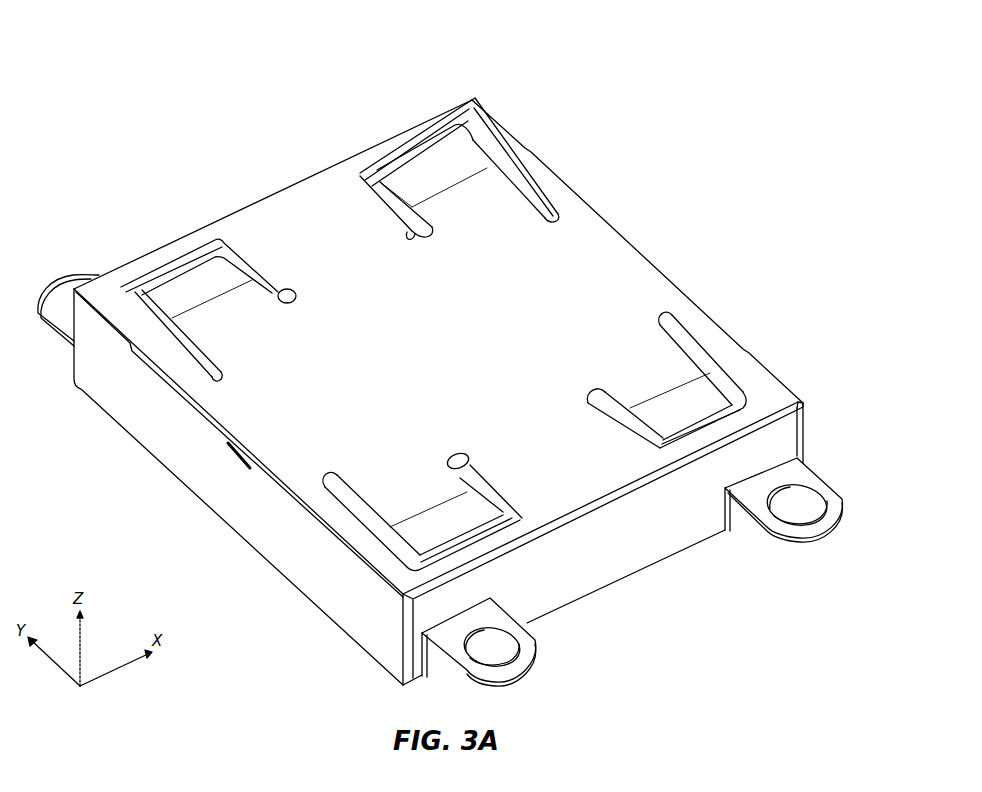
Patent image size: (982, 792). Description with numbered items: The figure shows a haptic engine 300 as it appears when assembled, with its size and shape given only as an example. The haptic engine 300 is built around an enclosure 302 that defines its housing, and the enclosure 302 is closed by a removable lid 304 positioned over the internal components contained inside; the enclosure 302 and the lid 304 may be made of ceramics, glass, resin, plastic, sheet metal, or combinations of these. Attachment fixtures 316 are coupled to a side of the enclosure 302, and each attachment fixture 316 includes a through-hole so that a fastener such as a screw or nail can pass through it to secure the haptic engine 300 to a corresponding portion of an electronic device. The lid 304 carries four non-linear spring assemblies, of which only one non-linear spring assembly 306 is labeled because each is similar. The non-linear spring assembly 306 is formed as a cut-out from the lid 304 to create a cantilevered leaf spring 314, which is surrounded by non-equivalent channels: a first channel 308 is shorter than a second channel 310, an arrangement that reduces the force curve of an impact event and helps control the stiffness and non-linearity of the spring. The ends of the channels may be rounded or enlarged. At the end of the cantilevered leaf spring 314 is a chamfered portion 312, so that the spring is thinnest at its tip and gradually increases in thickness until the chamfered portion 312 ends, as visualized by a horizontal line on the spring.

The haptic engine 300 is at (161, 72).
The enclosure 302 is at (202, 503).
The lid 304 is at (622, 228).
The non-linear spring assembly 306 is at (432, 100).
The first channel 308 is at (395, 132).
The second channel 310 is at (546, 186).
The chamfered portion 312 is at (403, 160).
The cantilevered leaf spring 314 is at (452, 196).
The attachment fixture 316 is at (845, 493).